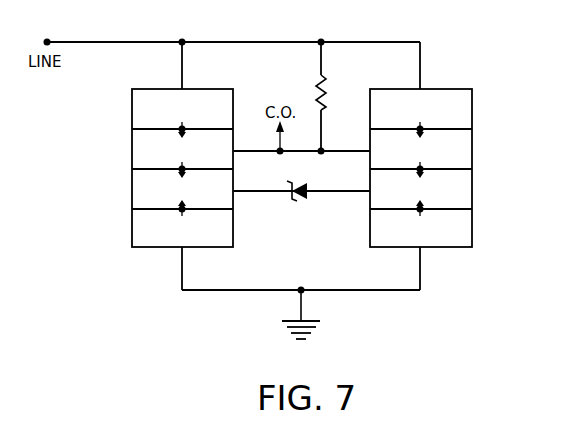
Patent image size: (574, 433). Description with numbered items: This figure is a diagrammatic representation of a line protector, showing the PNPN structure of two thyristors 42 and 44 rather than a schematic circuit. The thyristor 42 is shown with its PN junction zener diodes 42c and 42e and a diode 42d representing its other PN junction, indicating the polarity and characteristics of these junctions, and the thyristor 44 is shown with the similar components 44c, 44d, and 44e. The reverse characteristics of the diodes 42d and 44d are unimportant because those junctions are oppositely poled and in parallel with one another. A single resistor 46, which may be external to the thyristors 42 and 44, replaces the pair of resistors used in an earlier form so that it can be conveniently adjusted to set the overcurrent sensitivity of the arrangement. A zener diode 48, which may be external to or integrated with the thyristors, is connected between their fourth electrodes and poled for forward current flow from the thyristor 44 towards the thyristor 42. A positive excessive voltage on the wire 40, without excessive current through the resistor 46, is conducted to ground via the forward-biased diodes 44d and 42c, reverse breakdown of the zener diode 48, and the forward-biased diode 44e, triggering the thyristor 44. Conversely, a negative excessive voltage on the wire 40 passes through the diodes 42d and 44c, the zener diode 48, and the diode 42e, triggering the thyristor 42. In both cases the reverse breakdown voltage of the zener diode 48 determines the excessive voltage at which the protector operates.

The wire 40 is at (127, 41).
The thyristor 42 is at (118, 194).
The PN junction zener diode 42c is at (182, 169).
The diode 42d is at (182, 129).
The PN junction zener diode 42e is at (182, 209).
The thyristor 44 is at (500, 190).
The PN junction zener diode 44c is at (420, 169).
The diode 44d is at (420, 129).
The PN junction zener diode 44e is at (420, 209).
The resistor 46 is at (316, 87).
The zener diode 48 is at (298, 197).